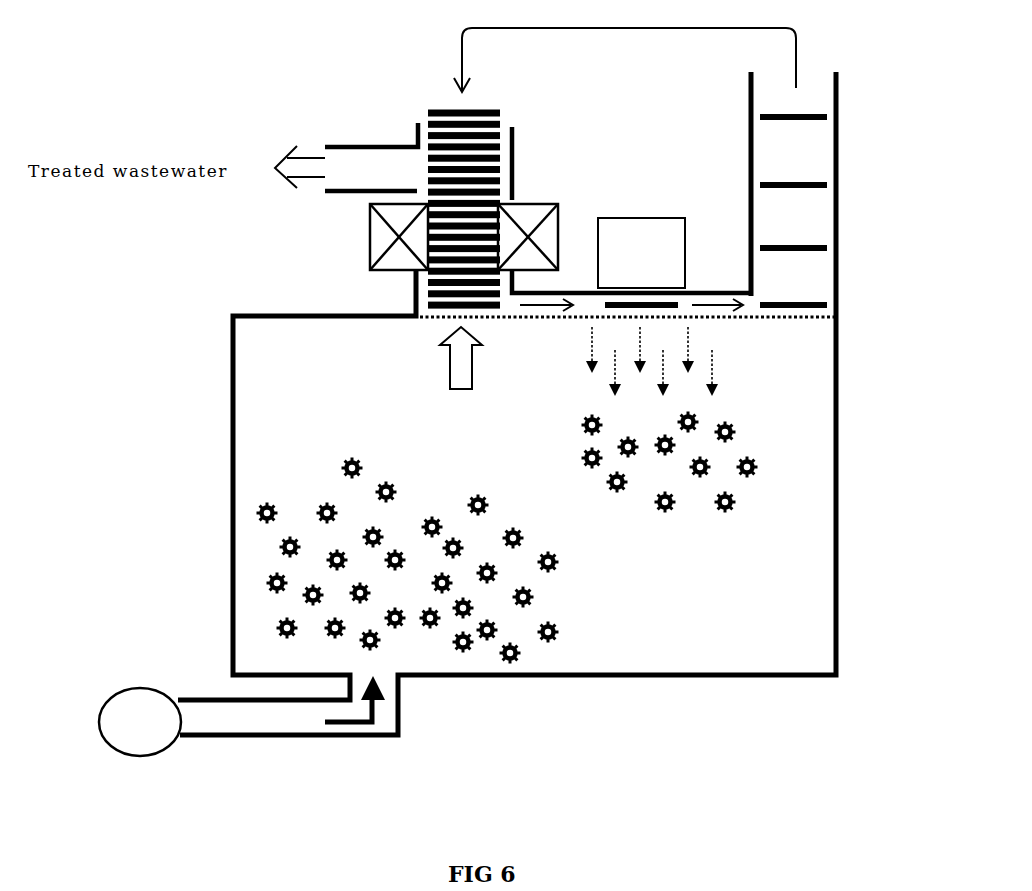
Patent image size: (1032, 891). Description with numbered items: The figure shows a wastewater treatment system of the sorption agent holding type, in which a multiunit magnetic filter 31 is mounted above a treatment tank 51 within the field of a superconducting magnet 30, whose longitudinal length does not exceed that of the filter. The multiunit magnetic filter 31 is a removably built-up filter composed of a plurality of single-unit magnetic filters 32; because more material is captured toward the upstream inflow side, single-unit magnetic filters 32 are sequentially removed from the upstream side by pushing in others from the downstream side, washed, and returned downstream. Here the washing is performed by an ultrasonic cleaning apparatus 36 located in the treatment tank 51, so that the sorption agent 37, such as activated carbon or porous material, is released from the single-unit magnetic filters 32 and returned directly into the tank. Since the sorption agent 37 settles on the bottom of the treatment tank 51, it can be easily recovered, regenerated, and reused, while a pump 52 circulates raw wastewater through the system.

The superconducting magnet 30 is at (370, 251).
The multiunit magnetic filter 31 is at (428, 119).
The single-unit magnetic filter 32 is at (793, 185).
The ultrasonic cleaning apparatus 36 is at (633, 218).
The sorption agent 37 is at (756, 472).
The treatment tank 51 is at (710, 676).
The pump 52 is at (122, 689).